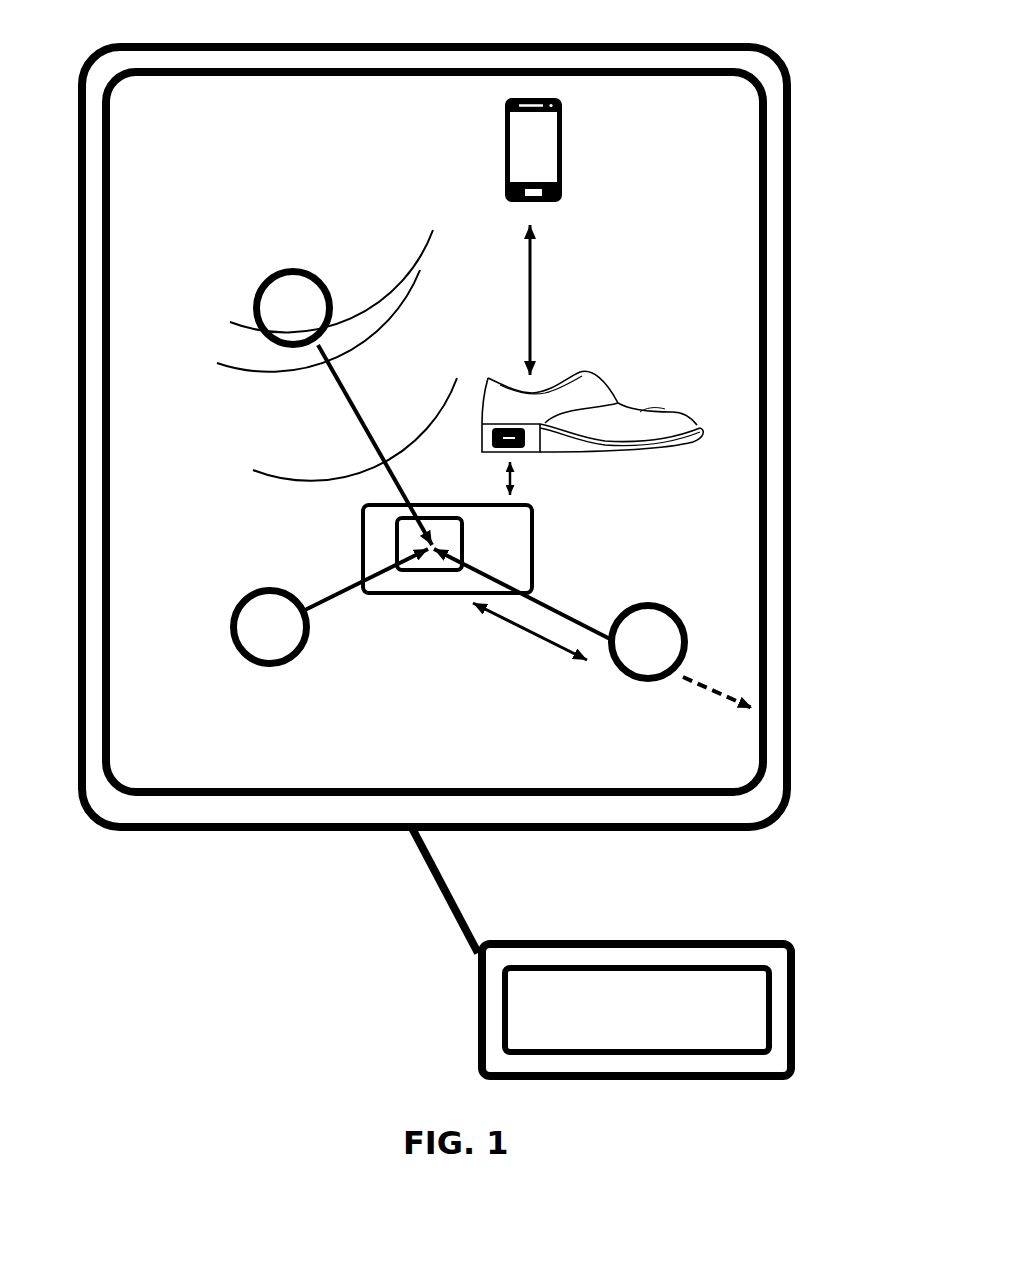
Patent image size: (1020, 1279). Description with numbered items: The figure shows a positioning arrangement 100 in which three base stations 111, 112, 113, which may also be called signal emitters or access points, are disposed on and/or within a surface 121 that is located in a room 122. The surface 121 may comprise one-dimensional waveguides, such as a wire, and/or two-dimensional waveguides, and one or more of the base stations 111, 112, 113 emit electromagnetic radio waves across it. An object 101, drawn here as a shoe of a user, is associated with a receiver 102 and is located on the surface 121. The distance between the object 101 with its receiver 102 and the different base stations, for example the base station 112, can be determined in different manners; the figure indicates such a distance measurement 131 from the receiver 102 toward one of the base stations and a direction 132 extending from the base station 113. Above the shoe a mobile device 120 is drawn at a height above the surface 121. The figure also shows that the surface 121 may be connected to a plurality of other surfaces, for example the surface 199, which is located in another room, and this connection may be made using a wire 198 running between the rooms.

The system 100 is at (375, 32).
The object 101 is at (552, 448).
The receiver 102 is at (463, 533).
The base station 111 is at (295, 267).
The base station 112 is at (263, 585).
The base station 113 is at (658, 603).
The mobile device 120 is at (568, 152).
The surface 121 is at (555, 868).
The room 122 is at (623, 808).
The distance measurement 131 is at (508, 628).
The direction vector 132 is at (707, 702).
The wire 198 is at (433, 888).
The surface 199 is at (743, 1015).